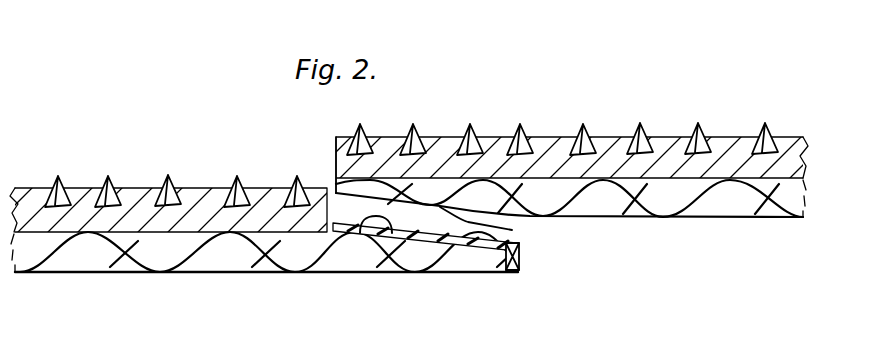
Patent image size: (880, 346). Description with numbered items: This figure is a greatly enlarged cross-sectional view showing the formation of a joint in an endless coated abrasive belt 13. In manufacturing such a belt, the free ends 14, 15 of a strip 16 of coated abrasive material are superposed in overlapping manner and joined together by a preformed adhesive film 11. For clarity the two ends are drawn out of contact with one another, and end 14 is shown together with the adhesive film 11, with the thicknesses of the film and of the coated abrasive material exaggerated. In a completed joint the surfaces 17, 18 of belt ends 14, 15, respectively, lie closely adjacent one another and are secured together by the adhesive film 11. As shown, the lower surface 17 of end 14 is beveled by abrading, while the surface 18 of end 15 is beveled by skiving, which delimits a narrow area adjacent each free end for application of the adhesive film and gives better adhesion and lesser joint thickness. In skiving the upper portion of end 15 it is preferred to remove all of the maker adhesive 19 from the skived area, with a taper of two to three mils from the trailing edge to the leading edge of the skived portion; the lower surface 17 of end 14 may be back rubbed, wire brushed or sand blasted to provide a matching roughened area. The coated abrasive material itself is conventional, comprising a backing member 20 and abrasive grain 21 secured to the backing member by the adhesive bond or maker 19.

The adhesive film 11 is at (441, 245).
The endless coated abrasive belt 13 is at (608, 115).
The free end 14 is at (333, 160).
The free end 15 is at (520, 258).
The strip 16 is at (784, 135).
The lower surface 17 is at (470, 224).
The surface 18 is at (358, 235).
The maker adhesive 19 is at (82, 190).
The backing member 20 is at (143, 273).
The abrasive grain 21 is at (240, 182).